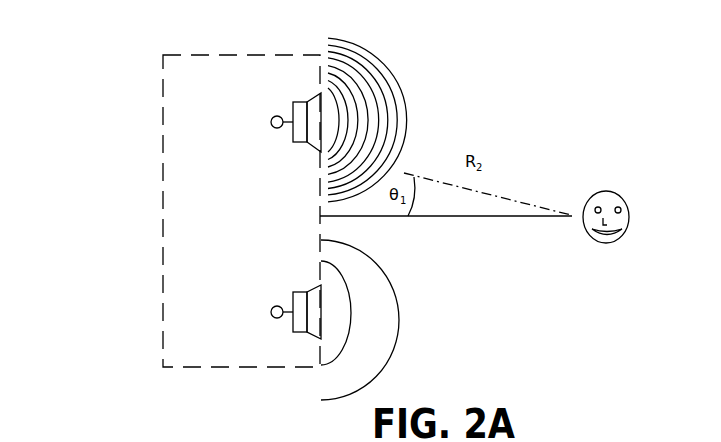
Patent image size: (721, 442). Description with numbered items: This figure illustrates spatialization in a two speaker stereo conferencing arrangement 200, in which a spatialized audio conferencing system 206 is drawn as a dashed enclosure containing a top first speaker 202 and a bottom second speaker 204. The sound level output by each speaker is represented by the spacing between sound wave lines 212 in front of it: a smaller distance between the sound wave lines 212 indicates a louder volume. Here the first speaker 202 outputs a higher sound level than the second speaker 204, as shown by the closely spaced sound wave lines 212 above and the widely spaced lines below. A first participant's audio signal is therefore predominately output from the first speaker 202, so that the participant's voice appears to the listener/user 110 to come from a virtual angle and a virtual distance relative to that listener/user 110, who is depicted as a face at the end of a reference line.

The audio system 200 is at (108, 46).
The first speaker 202 is at (272, 106).
The second speaker 204 is at (270, 297).
The spatialized audio conferencing system 206 is at (176, 380).
The sound wave lines 212 is at (404, 75).
The listener/user 110 is at (617, 178).